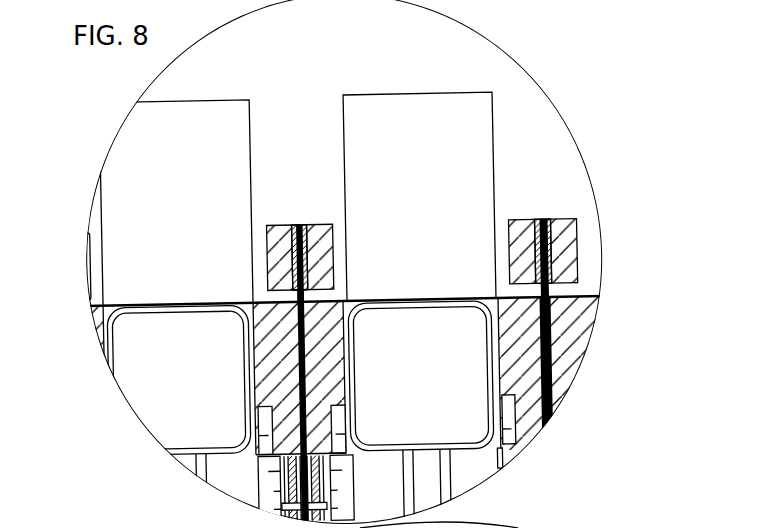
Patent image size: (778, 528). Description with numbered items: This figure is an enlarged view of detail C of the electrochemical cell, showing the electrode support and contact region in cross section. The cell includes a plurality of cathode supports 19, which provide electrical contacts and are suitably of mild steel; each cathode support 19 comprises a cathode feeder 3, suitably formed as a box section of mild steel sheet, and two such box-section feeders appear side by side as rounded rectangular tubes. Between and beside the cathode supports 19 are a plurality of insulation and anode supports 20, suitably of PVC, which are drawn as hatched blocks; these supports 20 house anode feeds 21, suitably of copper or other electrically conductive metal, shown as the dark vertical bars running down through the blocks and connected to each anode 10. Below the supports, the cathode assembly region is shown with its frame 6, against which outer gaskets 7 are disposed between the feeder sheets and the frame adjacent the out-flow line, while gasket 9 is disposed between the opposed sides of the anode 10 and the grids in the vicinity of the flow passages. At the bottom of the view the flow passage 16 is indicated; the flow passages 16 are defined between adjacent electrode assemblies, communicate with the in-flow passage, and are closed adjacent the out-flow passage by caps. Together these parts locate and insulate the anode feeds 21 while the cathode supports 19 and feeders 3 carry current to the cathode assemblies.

The cathode support 19 is at (468, 115).
The insulation and anode support 20 is at (327, 225).
The anode feed 21 is at (557, 218).
The anode 10 is at (552, 291).
The gasket 9 is at (556, 317).
The outer gasket 7 is at (502, 378).
The frame 6 is at (518, 426).
The cathode feeder 3 is at (468, 348).
The flow passage 16 is at (447, 518).
The detail C is at (86, 240).